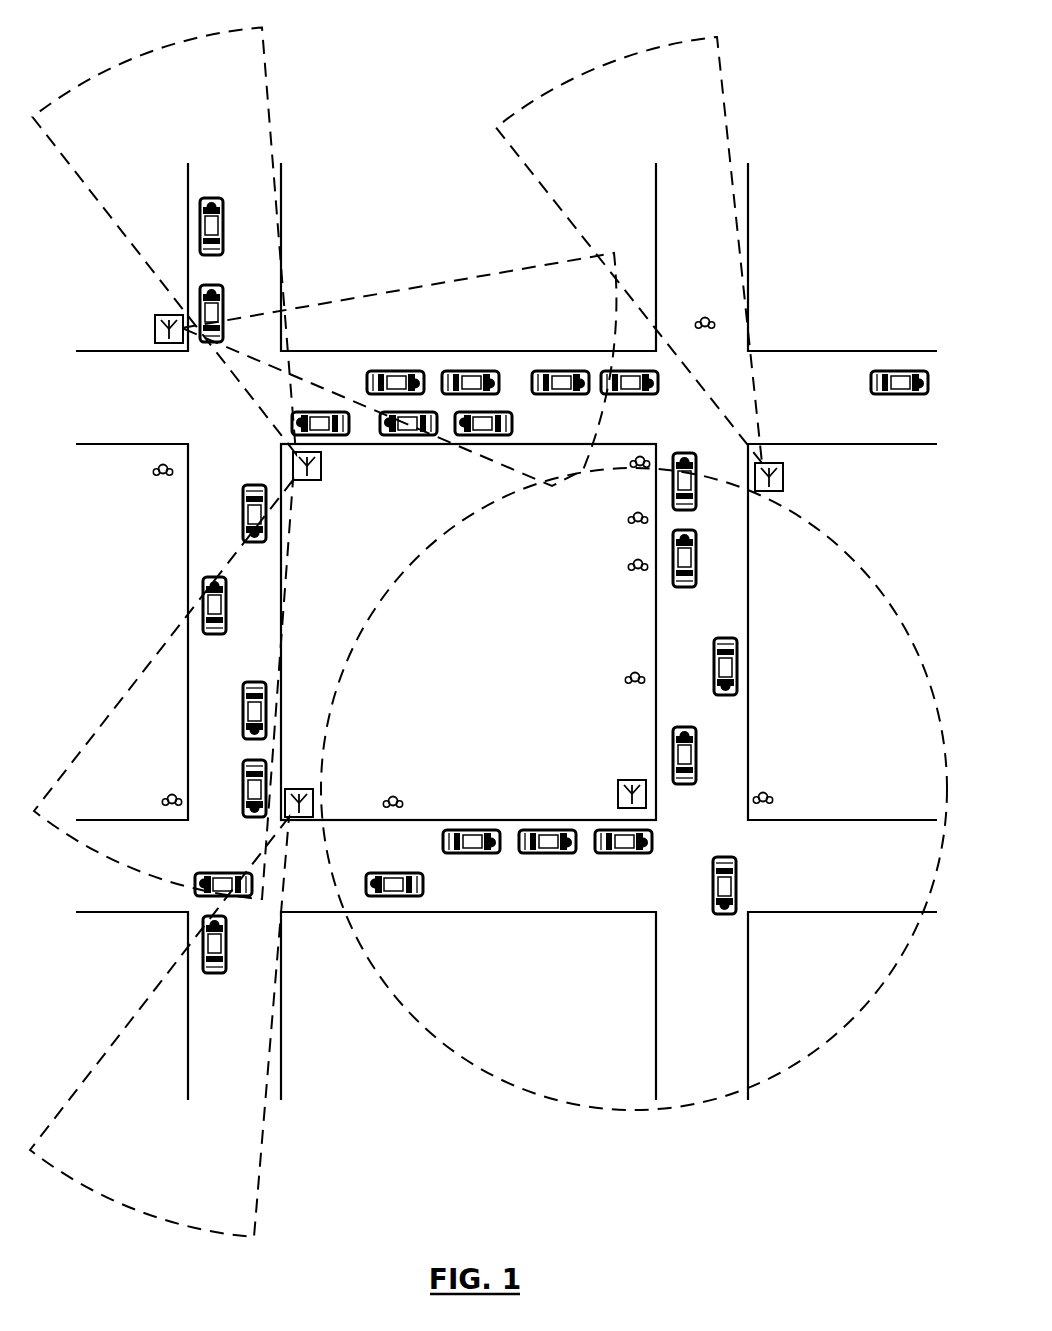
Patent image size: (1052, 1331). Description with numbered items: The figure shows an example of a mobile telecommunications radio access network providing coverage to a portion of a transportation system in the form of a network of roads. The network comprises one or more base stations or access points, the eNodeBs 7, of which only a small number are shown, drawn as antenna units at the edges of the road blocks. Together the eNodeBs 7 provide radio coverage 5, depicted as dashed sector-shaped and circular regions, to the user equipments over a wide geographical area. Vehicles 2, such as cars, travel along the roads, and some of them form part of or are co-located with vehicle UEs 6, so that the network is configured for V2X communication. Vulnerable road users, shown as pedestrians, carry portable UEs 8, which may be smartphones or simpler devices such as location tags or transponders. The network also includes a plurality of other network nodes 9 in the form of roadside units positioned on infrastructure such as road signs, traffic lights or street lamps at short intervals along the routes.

The vehicle 2 is at (224, 229).
The radio coverage 5 is at (97, 70).
The vehicle UE 6 is at (210, 198).
The eNodeB 7 is at (154, 330).
The portable UE 8 is at (163, 481).
The other network node 9 is at (505, 631).